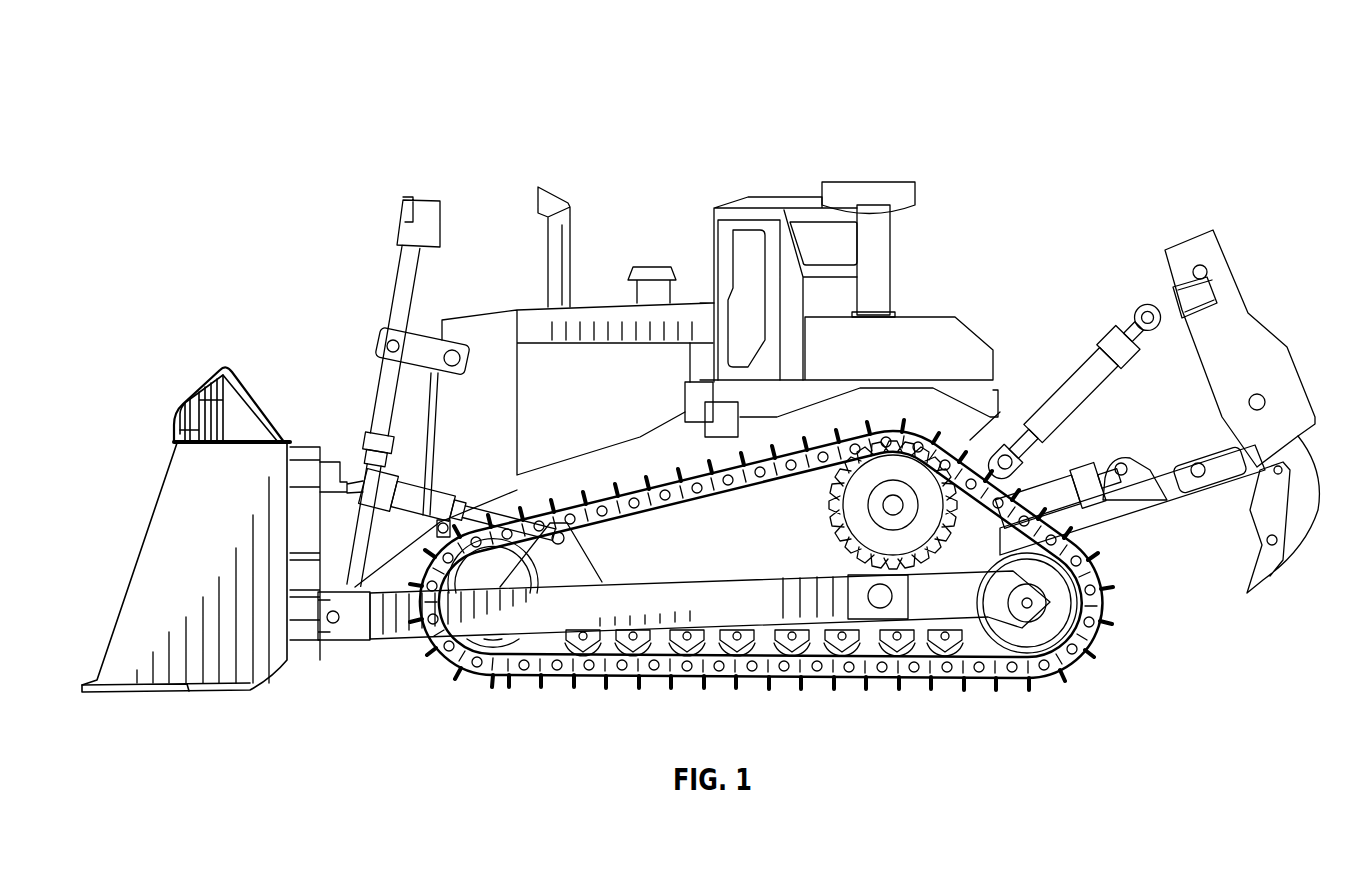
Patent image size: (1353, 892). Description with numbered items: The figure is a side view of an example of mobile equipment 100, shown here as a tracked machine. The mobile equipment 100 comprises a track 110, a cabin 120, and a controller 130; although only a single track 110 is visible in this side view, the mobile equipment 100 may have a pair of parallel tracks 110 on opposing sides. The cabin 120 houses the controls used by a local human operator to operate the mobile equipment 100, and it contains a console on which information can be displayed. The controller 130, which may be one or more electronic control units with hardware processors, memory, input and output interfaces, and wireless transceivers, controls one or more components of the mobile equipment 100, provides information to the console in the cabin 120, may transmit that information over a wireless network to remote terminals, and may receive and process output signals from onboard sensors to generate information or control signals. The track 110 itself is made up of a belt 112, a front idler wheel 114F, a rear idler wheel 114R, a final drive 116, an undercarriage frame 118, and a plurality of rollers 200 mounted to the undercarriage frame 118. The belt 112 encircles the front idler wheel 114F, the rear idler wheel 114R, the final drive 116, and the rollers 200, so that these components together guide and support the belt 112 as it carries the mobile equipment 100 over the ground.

The mobile equipment 100 is at (255, 104).
The track 110 is at (430, 660).
The belt 112 is at (880, 674).
The front idler wheel 114F is at (496, 640).
The rear idler wheel 114R is at (1053, 627).
The final drive 116 is at (862, 495).
The undercarriage frame 118 is at (572, 622).
The cabin 120 is at (743, 247).
The controller 130 is at (722, 418).
The rollers 200 is at (726, 690).